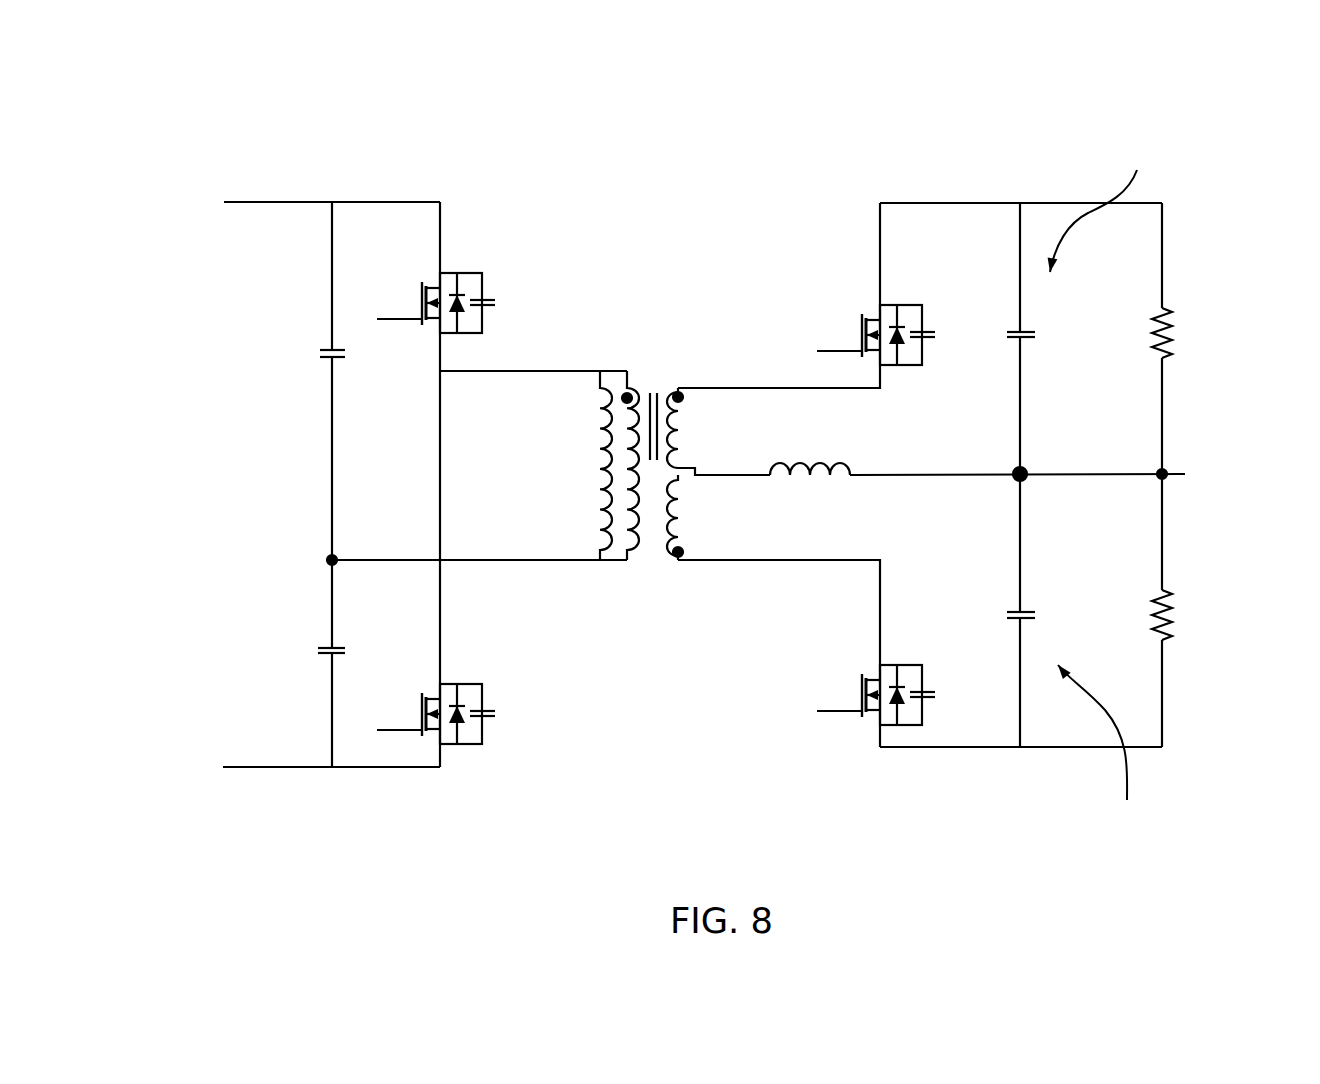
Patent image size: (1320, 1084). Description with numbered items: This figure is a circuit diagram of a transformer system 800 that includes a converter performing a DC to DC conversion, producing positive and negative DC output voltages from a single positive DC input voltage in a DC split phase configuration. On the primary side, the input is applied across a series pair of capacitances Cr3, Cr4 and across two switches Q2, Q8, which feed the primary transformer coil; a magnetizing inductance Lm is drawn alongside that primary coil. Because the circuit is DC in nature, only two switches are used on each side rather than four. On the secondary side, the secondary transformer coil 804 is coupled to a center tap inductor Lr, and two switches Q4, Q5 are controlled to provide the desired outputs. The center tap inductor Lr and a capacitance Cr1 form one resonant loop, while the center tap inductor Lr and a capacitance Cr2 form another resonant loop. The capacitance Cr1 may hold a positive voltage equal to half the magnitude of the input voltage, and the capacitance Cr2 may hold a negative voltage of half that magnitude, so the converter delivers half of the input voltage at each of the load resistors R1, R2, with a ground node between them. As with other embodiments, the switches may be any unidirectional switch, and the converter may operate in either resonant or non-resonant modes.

The transformer system 800 is at (998, 130).
The secondary transformer coil 804 is at (672, 568).
The switch Q2 is at (436, 303).
The switch Q4 is at (876, 335).
The switch Q5 is at (876, 695).
The switch Q8 is at (436, 714).
The capacitance Cr1 is at (1001, 322).
The capacitance Cr2 is at (1001, 595).
The capacitance Cr3 is at (311, 342).
The capacitance Cr4 is at (311, 631).
The load resistor R1 is at (1140, 333).
The load resistor R2 is at (1140, 615).
The magnetizing inductance Lm is at (586, 465).
The center tap inductor Lr is at (810, 452).